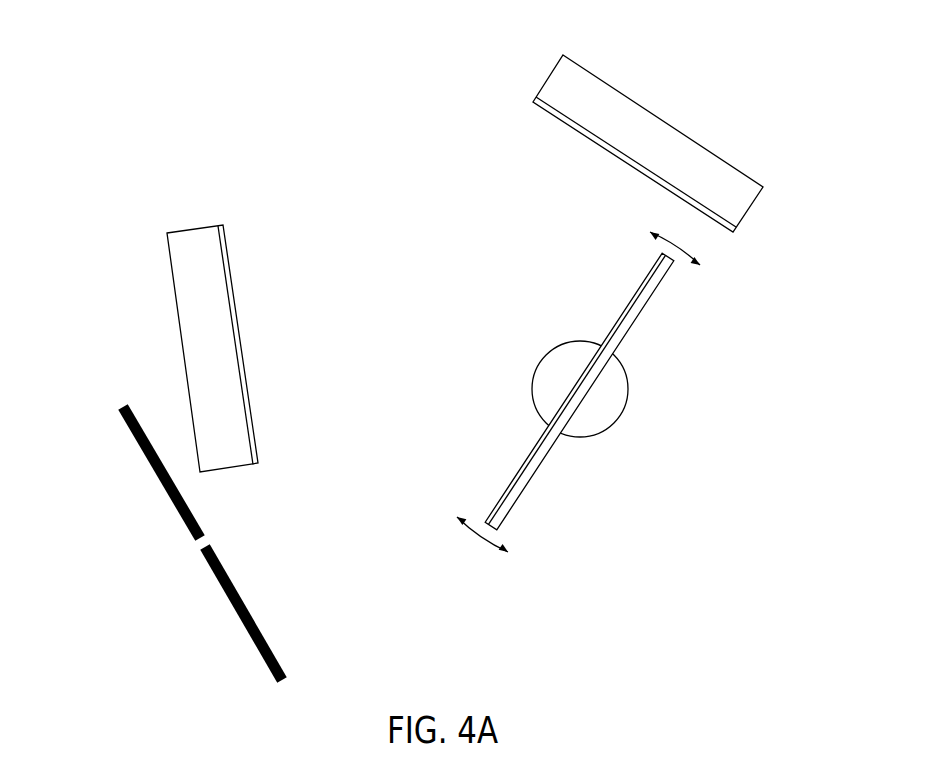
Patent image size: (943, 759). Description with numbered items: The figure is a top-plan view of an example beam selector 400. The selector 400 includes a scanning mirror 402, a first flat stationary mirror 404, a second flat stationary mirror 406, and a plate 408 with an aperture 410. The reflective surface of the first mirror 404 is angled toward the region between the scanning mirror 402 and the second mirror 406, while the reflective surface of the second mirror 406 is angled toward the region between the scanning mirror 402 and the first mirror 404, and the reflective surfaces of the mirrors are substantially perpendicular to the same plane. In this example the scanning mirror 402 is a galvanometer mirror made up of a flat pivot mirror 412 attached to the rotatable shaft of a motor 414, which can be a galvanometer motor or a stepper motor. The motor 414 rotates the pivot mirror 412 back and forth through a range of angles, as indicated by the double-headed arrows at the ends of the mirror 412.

The beam selector 400 is at (196, 138).
The scanning mirror 402 is at (584, 392).
The first flat stationary mirror 404 is at (193, 233).
The second flat stationary mirror 406 is at (748, 202).
The plate 408 is at (243, 620).
The aperture 410 is at (202, 545).
The flat pivot mirror 412 is at (508, 517).
The motor 414 is at (625, 410).